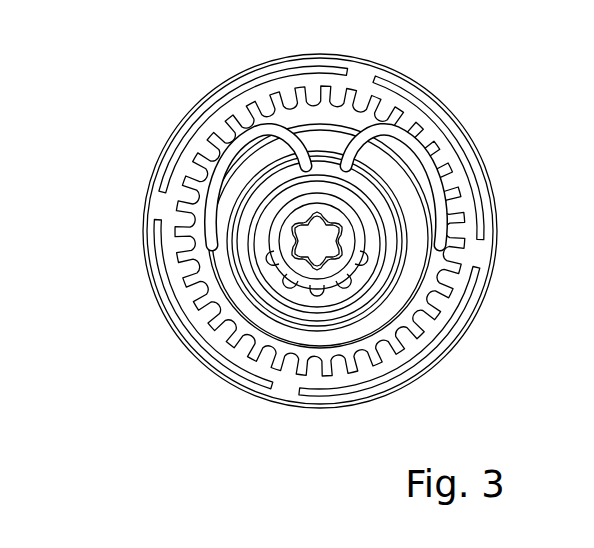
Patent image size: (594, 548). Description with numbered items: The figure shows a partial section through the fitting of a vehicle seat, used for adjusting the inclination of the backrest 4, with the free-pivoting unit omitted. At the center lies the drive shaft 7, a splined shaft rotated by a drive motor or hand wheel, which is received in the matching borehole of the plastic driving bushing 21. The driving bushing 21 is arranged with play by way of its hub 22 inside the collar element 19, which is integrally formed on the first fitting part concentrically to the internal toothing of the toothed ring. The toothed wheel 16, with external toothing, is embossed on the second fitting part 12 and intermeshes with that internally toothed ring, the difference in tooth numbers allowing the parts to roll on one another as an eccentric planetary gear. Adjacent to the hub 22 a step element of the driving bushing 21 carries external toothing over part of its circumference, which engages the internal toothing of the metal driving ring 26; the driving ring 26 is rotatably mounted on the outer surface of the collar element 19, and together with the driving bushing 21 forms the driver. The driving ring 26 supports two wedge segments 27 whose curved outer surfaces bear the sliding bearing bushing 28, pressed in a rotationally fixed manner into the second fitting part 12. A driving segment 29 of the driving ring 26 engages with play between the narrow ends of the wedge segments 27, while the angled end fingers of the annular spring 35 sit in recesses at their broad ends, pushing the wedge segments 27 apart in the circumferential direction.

The backrest 4 is at (283, 542).
The drive shaft 7 is at (323, 243).
The second fitting part 12 is at (412, 88).
The toothed wheel 16 is at (358, 100).
The collar element 19 is at (357, 242).
The driving bushing 21 is at (337, 262).
The hub 22 is at (347, 222).
The driving ring 26 is at (283, 252).
The wedge segments 27 is at (368, 177).
The sliding bearing bushing 28 is at (347, 318).
The driving segment 29 is at (248, 258).
The annular spring 35 is at (213, 177).